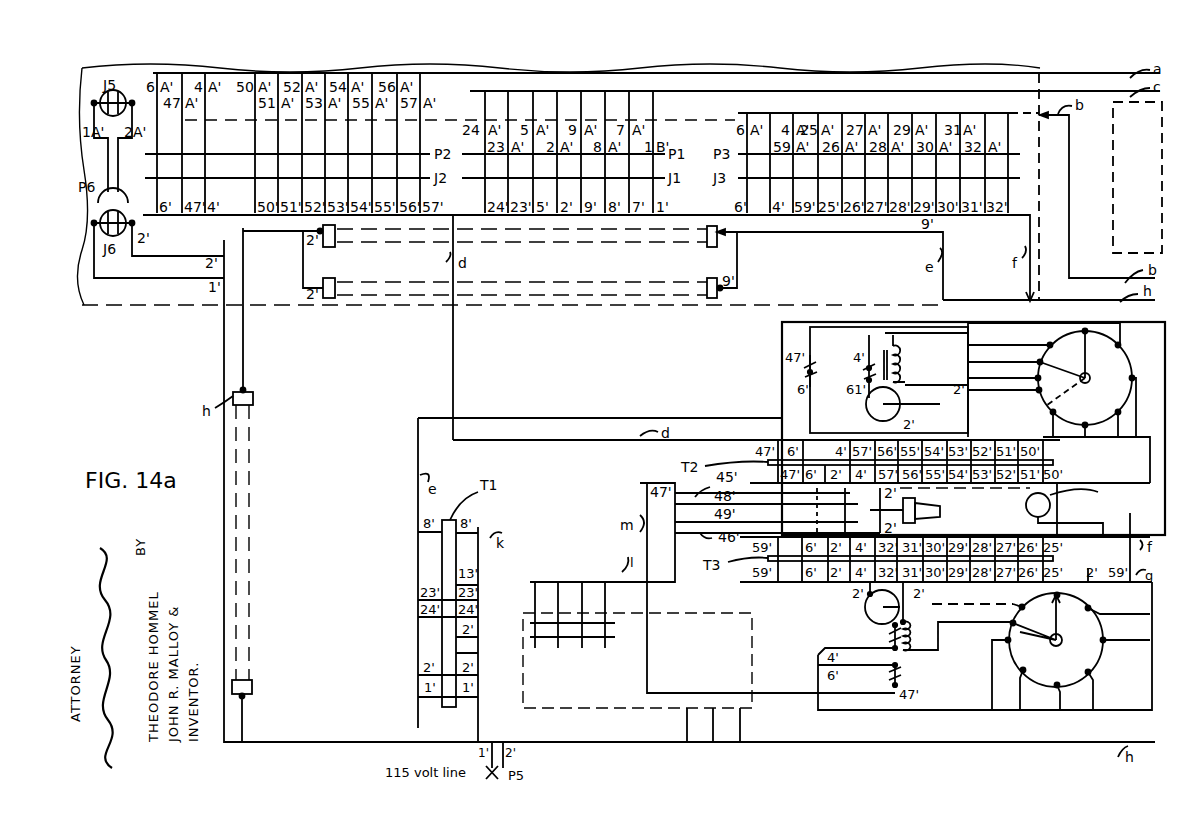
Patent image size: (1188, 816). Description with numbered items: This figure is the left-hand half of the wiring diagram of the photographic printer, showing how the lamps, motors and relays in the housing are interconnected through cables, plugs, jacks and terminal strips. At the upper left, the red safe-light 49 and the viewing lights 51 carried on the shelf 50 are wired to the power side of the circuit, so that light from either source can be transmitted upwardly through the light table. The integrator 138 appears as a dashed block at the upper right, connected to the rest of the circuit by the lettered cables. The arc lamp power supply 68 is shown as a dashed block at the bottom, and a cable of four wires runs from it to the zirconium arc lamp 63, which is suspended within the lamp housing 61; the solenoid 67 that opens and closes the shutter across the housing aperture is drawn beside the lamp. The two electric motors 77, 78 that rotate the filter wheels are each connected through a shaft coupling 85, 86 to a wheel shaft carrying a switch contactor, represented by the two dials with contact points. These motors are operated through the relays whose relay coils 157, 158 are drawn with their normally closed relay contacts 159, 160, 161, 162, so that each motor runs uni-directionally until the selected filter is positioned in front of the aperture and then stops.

The shelf 50 is at (130, 305).
The viewing lights 51 is at (600, 273).
The red safe-light 49 is at (248, 588).
The arc lamp power supply 68 is at (595, 712).
The integrator 138 is at (1137, 177).
The relay contact 160 is at (806, 370).
The relay contact 159 is at (862, 372).
The relay coil 157 is at (926, 359).
The electric motor 78 is at (866, 410).
The shaft coupling 86 is at (1127, 428).
The lamp housing 61 is at (1085, 497).
The solenoid 67 is at (1050, 507).
The zirconium arc lamp 63 is at (935, 510).
The electric motor 77 is at (866, 610).
The relay contact 161 is at (890, 638).
The relay coil 158 is at (915, 650).
The shaft coupling 85 is at (1005, 641).
The relay contact 162 is at (900, 688).